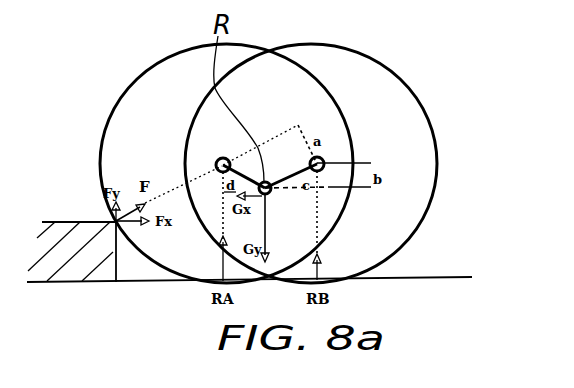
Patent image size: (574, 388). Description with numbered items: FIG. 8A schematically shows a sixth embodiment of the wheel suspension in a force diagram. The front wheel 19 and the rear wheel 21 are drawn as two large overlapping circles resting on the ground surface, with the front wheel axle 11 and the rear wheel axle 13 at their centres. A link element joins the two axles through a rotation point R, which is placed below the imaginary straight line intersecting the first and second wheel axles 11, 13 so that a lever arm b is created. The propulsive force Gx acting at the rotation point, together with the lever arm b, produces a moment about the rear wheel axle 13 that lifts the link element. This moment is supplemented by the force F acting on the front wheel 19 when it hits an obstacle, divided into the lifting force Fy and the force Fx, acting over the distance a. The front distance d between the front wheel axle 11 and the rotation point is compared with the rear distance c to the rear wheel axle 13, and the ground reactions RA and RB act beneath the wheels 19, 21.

The first wheel axle 11 is at (219, 171).
The second wheel axle 13 is at (323, 170).
The front wheel 19 is at (143, 254).
The rear wheel 21 is at (425, 214).